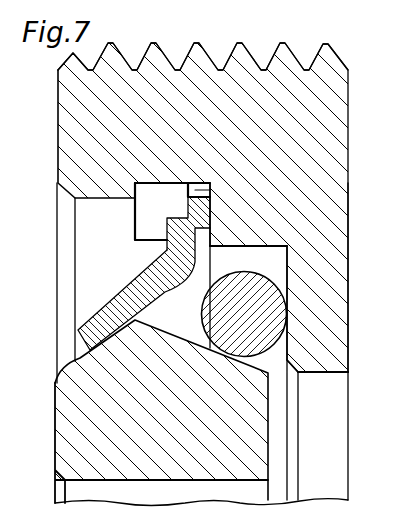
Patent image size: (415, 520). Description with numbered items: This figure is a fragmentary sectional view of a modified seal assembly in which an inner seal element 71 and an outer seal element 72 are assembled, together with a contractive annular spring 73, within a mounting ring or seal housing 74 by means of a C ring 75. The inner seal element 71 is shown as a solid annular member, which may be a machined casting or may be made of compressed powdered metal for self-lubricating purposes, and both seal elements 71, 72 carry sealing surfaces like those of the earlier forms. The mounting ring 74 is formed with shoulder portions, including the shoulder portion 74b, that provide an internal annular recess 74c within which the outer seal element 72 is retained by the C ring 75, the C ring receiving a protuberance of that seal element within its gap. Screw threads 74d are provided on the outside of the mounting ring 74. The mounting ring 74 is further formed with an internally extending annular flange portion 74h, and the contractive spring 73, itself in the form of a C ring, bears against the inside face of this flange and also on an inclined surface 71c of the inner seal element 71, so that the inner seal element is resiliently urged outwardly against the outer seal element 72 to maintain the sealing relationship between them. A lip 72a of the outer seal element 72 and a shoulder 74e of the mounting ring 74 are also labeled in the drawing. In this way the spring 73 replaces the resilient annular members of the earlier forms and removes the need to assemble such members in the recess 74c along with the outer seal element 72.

The inner seal element 71 is at (68, 435).
The inclined surface 71c is at (250, 366).
The outer seal element 72 is at (102, 312).
The wedge lip 72a is at (172, 243).
The contractive annular spring 73 is at (270, 302).
The mounting ring 74 is at (62, 120).
The shoulder portion 74b is at (138, 190).
The internal annular recess 74c is at (193, 184).
The screw threads 74d is at (220, 55).
The groove shoulder 74e is at (204, 191).
The internally extending annular flange portion 74h is at (335, 330).
The C ring 75 is at (140, 219).